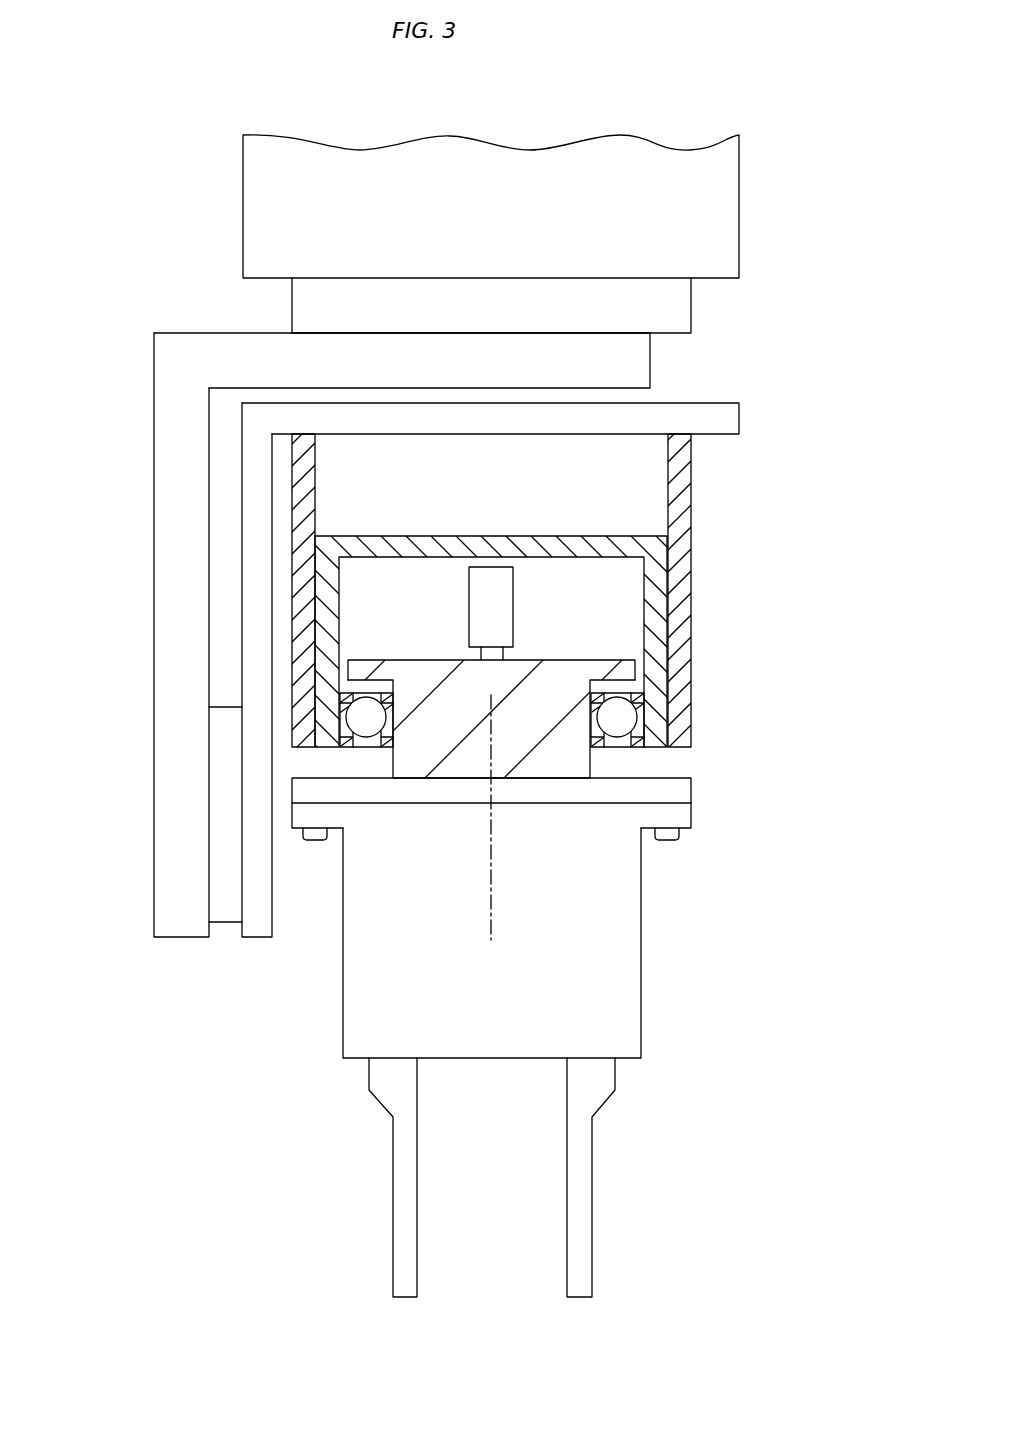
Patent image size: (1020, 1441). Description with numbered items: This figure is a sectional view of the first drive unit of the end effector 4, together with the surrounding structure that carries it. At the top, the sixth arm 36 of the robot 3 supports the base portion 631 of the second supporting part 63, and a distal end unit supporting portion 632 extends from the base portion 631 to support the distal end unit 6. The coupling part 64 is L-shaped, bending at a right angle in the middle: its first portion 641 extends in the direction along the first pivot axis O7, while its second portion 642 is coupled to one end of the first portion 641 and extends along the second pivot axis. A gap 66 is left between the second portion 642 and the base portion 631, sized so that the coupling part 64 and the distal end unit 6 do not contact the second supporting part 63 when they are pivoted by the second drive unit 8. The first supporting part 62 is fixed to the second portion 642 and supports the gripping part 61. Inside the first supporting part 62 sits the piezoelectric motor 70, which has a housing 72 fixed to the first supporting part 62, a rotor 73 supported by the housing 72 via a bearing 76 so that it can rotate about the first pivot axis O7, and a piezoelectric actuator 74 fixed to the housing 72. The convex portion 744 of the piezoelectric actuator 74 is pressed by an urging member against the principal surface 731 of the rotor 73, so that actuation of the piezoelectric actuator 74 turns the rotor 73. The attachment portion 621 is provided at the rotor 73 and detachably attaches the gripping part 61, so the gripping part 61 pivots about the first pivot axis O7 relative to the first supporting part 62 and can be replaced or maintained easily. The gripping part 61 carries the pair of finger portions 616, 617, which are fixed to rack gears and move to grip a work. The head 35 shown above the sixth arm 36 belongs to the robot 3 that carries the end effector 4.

The spindle unit 3 is at (143, 211).
The spindle head 35 is at (720, 213).
The sixth arm 36 is at (673, 310).
The end effector 4 is at (146, 387).
The second supporting part 63 is at (359, 515).
The base portion 631 is at (355, 355).
The distal end unit supporting portion 632 is at (172, 780).
The coupling part 64 is at (443, 670).
The first portion 641 is at (257, 650).
The second portion 642 is at (727, 423).
The gap 66 is at (575, 397).
The second drive unit 8 is at (172, 835).
The piezoelectric motor 70 is at (599, 528).
The first supporting part 62 is at (677, 518).
The housing 72 is at (657, 597).
The piezoelectric actuator 74 is at (497, 592).
The convex portion 744 is at (482, 655).
The principal surface 731 is at (560, 660).
The rotor 73 is at (552, 765).
The bearing 76 is at (638, 732).
The first pivot axis O7 is at (495, 908).
The distal end unit 6 is at (727, 803).
The attachment portion 621 is at (315, 797).
The gripping part 61 is at (625, 1000).
The finger portion 616 is at (403, 1282).
The finger portion 617 is at (575, 1282).